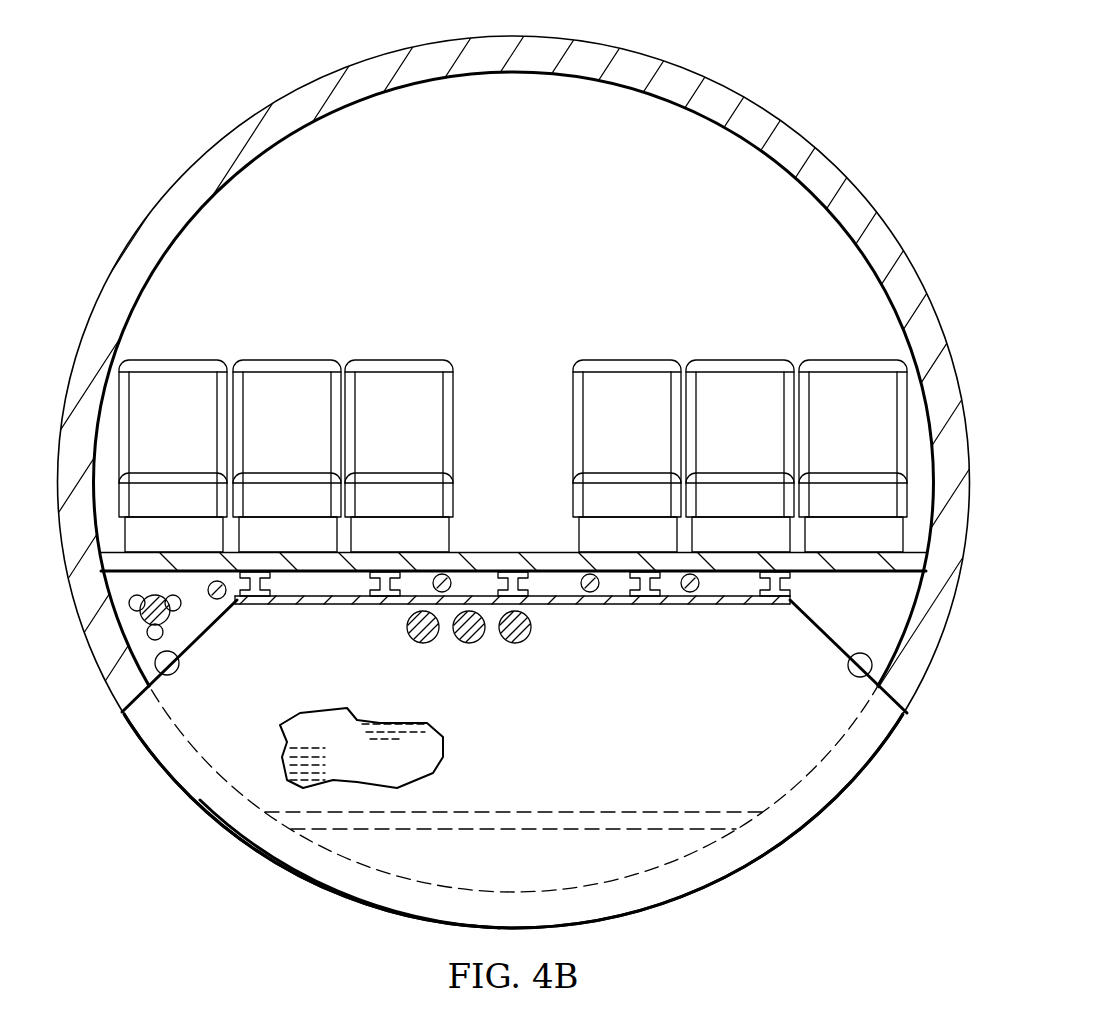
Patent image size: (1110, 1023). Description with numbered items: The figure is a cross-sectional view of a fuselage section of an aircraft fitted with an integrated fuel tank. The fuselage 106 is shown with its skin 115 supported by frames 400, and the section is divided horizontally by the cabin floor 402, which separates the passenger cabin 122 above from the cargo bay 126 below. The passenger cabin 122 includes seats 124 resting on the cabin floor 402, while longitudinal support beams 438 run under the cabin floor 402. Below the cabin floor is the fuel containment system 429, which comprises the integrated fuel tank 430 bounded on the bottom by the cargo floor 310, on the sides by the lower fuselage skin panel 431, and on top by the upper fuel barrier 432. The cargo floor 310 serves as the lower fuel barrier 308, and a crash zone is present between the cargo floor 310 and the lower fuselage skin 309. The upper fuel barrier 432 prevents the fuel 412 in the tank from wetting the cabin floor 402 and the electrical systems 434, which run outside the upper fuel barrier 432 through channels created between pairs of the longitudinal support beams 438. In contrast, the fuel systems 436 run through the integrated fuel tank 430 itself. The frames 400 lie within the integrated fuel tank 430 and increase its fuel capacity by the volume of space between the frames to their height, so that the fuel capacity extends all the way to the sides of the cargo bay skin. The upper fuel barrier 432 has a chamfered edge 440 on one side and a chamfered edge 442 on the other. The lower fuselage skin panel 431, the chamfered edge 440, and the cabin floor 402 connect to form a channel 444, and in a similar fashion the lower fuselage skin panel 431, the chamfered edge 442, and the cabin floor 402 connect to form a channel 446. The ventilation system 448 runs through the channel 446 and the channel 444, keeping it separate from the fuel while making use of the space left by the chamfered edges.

The fuselage 106 is at (555, 511).
The skin 115 is at (763, 107).
The frames 400 is at (780, 167).
The passenger cabin 122 is at (497, 239).
The seats 124 is at (305, 326).
The cargo bay 126 is at (861, 600).
The longitudinal support beams 438 is at (745, 585).
The fuel containment system 429 is at (481, 582).
The cabin floor 402 is at (557, 562).
The integrated fuel tank 430 is at (497, 749).
The fuel 412 is at (340, 766).
The lower fuel barrier 308 is at (605, 805).
The cargo floor 310 is at (697, 809).
The lower fuselage skin 309 is at (768, 858).
The lower fuselage skin panel 431 is at (305, 880).
The upper fuel barrier 432 is at (378, 605).
The electrical systems 434 is at (592, 593).
The fuel systems 436 is at (418, 643).
The chamfered edge 440 is at (866, 678).
The chamfered edge 442 is at (178, 658).
The channel 444 is at (828, 611).
The channel 446 is at (212, 610).
The ventilation system 448 is at (178, 607).